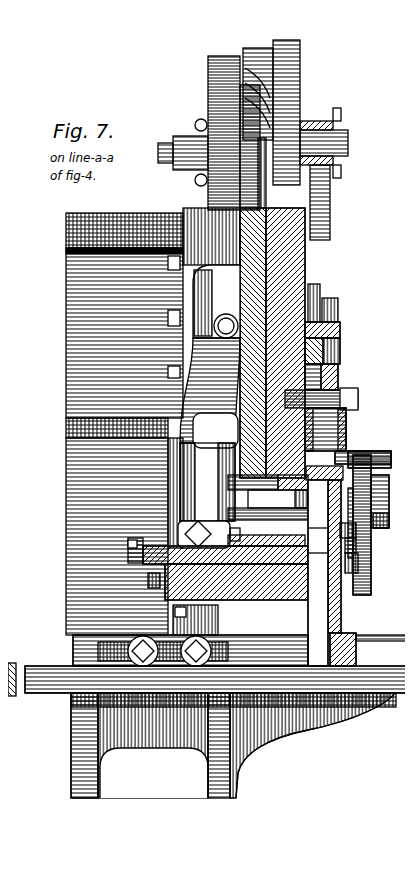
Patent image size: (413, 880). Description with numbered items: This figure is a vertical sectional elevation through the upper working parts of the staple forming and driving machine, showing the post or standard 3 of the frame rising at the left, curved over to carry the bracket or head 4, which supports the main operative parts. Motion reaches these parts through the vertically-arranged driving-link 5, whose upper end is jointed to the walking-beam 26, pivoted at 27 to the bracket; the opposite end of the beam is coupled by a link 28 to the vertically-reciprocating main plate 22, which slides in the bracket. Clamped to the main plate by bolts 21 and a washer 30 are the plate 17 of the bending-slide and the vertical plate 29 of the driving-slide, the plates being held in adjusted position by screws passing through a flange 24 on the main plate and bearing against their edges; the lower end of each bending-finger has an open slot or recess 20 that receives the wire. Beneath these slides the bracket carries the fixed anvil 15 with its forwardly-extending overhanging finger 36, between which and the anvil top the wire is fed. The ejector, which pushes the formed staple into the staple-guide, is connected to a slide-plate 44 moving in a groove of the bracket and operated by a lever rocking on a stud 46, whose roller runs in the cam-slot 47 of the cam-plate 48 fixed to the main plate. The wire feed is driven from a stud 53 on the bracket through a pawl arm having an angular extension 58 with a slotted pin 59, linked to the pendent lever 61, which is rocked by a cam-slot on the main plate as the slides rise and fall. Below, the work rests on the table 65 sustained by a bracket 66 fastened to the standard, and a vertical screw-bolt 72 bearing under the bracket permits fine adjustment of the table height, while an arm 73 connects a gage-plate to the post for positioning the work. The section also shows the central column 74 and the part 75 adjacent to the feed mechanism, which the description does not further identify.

The post or standard 3 is at (115, 424).
The bracket or head 4 is at (182, 204).
The driving-link 5 is at (248, 42).
The anvil 15 is at (315, 540).
The plate 17 is at (332, 345).
The open slot or recess 20 is at (348, 536).
The bolts 21 is at (350, 390).
The main plate 22 is at (331, 202).
The flange 24 is at (332, 322).
The walking-beam 26 is at (286, 70).
The pivot 27 is at (200, 93).
The link 28 is at (318, 190).
The vertical plate 29 is at (332, 373).
The washer 30 is at (338, 418).
The overhanging finger 36 is at (386, 529).
The slide-plate 44 is at (190, 513).
The stud 46 is at (215, 408).
The cam-slot 47 is at (210, 390).
The cam-plate 48 is at (211, 273).
The stud 53 is at (383, 452).
The angular extension 58 is at (363, 570).
The pin 59 is at (381, 514).
The pendent lever 61 is at (252, 198).
The table 65 is at (372, 670).
The bracket 66 is at (332, 724).
The screw-bolt 72 is at (333, 630).
The arm 73 is at (270, 640).
The column 74 is at (362, 594).
The shaft 75 is at (350, 555).